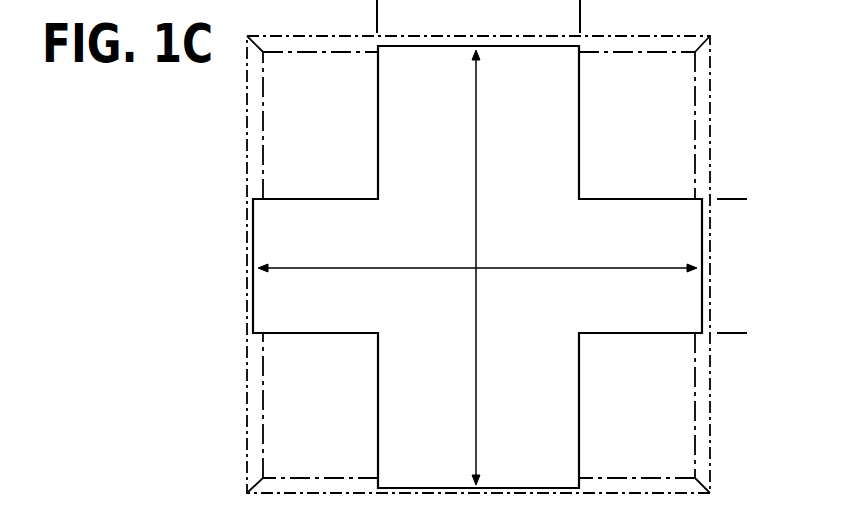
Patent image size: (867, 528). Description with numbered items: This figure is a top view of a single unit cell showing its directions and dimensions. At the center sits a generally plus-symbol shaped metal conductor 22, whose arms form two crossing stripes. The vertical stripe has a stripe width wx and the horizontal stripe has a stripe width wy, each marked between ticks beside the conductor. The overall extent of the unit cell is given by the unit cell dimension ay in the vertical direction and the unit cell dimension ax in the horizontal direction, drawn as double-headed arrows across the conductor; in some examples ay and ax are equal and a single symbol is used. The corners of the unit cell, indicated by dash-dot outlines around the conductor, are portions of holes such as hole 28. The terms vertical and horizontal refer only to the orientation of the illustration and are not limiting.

The cross-shaped radiating element 22 is at (272, 229).
The hole 28 is at (277, 370).
The stripe width in the vertical direction wx is at (578, 16).
The stripe width in the horizontal direction wy is at (731, 205).
The unit cell dimension in the horizontal direction ax is at (477, 285).
The unit cell dimension in the vertical direction ay is at (493, 267).